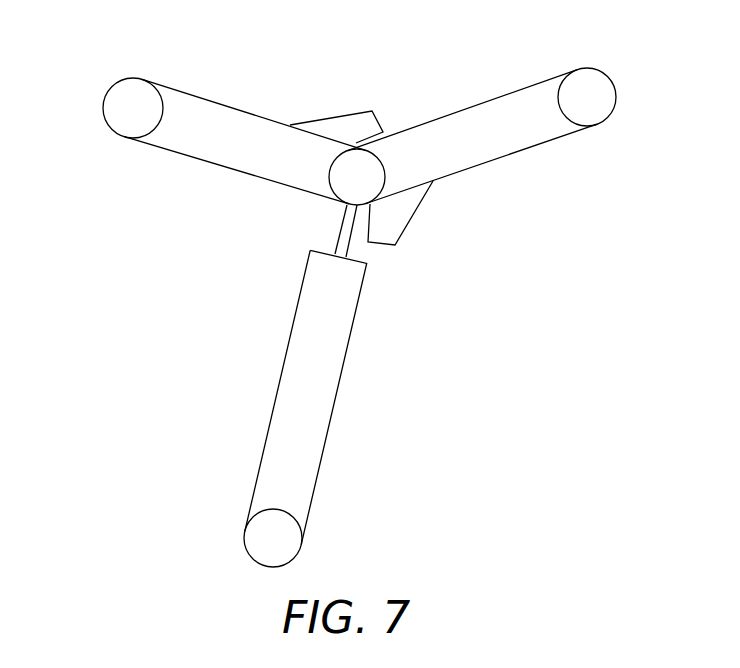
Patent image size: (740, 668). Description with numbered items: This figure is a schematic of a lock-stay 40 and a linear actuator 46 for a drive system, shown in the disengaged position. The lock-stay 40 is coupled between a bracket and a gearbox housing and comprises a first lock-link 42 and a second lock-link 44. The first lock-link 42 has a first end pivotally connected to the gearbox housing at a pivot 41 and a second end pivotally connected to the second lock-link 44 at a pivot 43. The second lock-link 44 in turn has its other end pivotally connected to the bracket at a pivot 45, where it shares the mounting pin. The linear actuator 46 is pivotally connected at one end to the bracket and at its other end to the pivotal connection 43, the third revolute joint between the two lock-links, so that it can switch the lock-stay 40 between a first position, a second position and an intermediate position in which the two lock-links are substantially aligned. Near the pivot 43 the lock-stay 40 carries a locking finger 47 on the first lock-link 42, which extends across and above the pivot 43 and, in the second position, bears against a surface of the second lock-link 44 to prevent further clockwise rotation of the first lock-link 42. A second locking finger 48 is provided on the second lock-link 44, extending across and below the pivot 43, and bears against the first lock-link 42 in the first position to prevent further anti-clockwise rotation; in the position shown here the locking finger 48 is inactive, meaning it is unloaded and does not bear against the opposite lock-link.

The lock-stay 40 is at (89, 58).
The pivotal connection of first lock-link to gearbox housing 41 is at (602, 108).
The first lock-link 42 is at (222, 112).
The pivotal connection between first and second lock-links 43 is at (338, 184).
The second lock-link 44 is at (503, 148).
The pivotal connection of second lock-link to bracket 45 is at (118, 124).
The linear actuator 46 is at (335, 355).
The locking finger 47 is at (343, 125).
The locking finger 48 is at (396, 228).